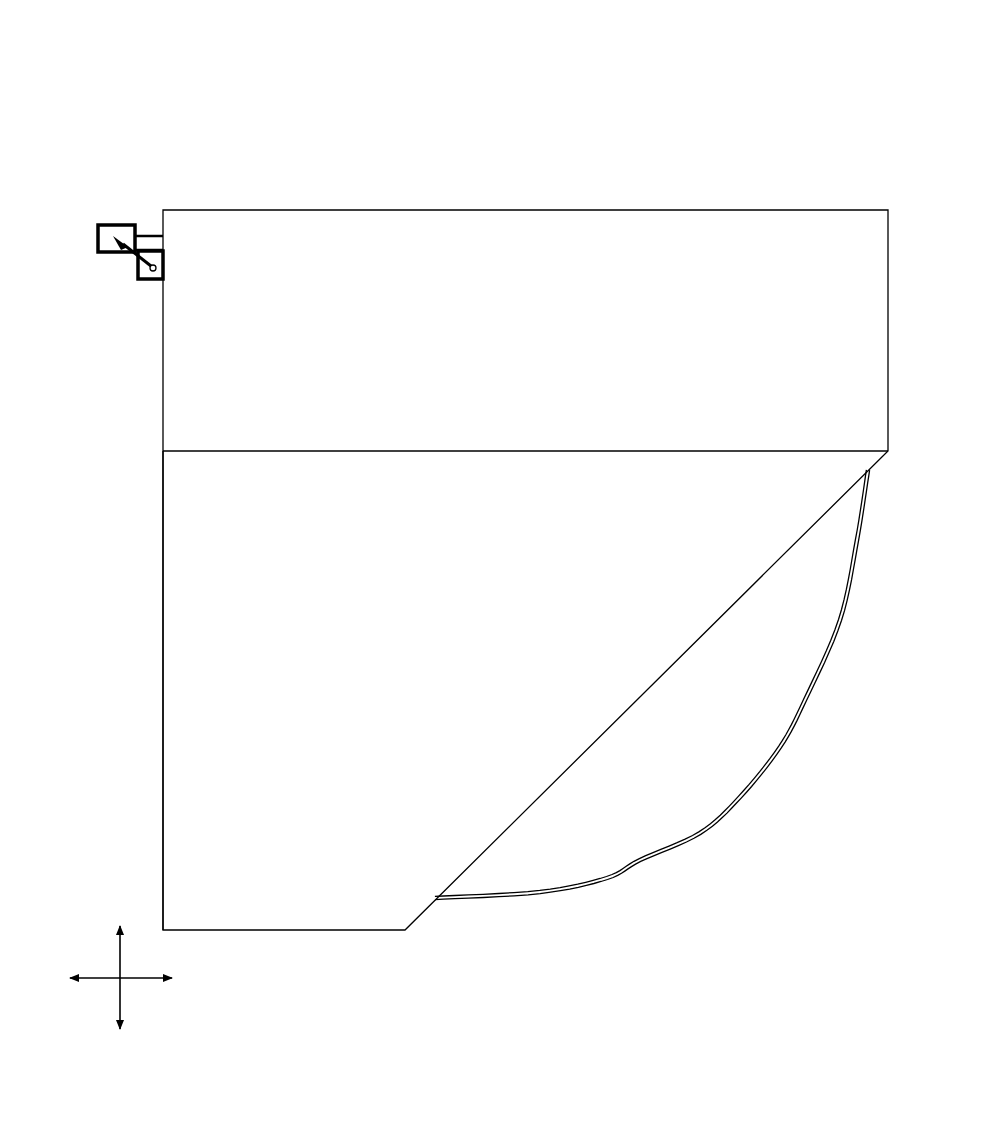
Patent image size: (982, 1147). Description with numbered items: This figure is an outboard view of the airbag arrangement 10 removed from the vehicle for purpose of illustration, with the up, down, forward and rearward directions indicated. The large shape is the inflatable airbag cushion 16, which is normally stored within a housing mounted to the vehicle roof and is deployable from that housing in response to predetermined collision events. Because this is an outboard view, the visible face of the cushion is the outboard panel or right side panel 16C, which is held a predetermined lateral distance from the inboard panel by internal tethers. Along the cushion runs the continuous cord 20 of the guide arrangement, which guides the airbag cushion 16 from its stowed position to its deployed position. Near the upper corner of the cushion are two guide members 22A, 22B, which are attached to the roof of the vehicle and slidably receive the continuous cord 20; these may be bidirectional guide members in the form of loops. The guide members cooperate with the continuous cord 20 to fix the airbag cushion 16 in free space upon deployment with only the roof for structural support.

The airbag arrangement 10 is at (114, 40).
The airbag cushion 16 is at (473, 570).
The outboard panel 16C is at (187, 753).
The continuous cord 20 is at (781, 747).
The guide member 22A is at (148, 282).
The guide member 22B is at (117, 222).